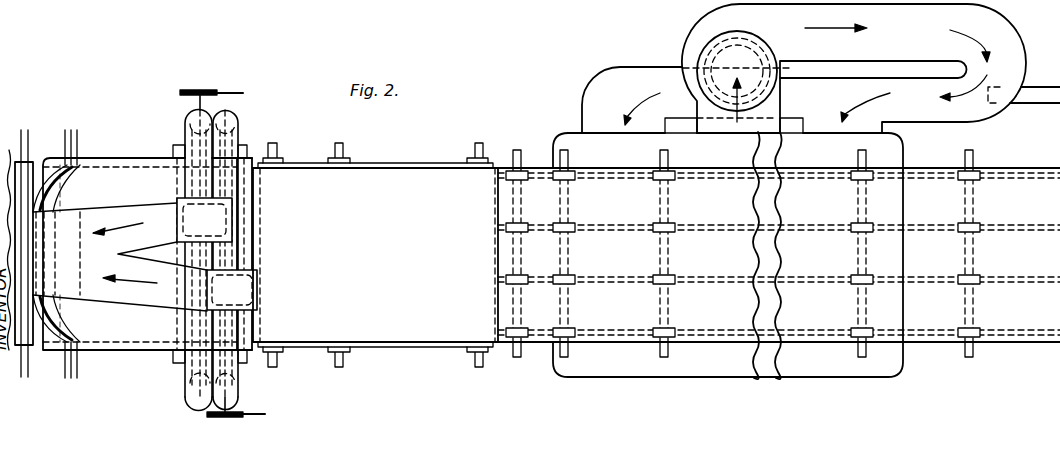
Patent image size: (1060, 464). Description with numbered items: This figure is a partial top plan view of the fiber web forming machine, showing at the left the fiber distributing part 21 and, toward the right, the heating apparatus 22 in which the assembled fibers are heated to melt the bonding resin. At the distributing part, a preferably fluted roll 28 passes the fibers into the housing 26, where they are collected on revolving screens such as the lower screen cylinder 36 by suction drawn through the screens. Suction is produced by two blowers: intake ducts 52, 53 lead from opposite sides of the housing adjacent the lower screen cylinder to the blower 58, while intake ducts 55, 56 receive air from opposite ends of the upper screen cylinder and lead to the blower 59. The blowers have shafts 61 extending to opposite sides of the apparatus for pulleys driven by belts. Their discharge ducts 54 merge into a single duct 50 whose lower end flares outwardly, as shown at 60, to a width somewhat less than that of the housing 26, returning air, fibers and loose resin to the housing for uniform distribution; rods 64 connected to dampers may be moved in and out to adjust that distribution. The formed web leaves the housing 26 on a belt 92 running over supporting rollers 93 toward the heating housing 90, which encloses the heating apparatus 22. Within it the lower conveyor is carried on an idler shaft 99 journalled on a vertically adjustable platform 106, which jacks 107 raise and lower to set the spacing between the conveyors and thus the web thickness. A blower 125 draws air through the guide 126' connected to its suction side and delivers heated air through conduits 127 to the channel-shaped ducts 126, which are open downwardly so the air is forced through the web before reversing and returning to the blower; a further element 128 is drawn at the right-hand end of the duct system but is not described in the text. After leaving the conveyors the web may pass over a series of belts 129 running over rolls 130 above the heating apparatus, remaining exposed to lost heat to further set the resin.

The fiber distributing part 21 is at (546, 218).
The heating apparatus 22 is at (779, 278).
The housing 26 is at (244, 197).
The roll 28 is at (33, 354).
The lower screen cylinder 36 is at (158, 0).
The discharge duct 50 is at (96, 288).
The intake duct 52 is at (237, 134).
The intake duct 53 is at (240, 376).
The discharge duct 54 is at (169, 205).
The intake duct 55 is at (185, 122).
The intake duct 56 is at (193, 398).
The blower 58 is at (257, 280).
The blower 59 is at (232, 218).
The flared end 60 is at (82, 201).
The blower shaft 61 is at (181, 94).
The damper rod 64 is at (74, 126).
The heating housing 90 is at (747, 377).
The belt 92 is at (375, 254).
The supporting roller 93 is at (283, 156).
The idler shaft 99 is at (532, 1).
The platform 106 is at (590, 1).
The jack 107 is at (505, 3).
The blower 125 is at (684, 40).
The channel-shaped duct 126 is at (725, 100).
The guide channel 126' is at (873, 75).
The conduit 127 is at (940, 14).
The exhaust pipe 128 is at (1028, 102).
The belt 129 is at (932, 180).
The roll 130 is at (570, 180).